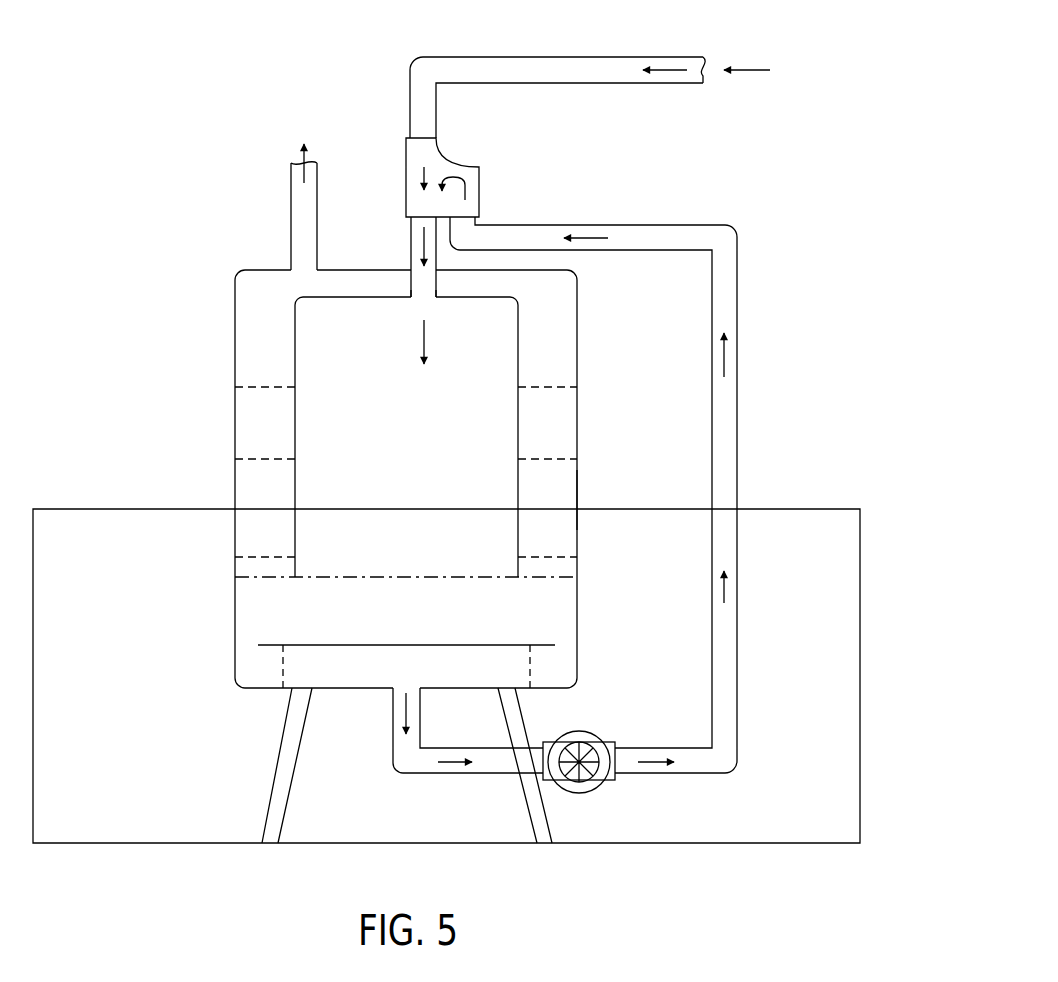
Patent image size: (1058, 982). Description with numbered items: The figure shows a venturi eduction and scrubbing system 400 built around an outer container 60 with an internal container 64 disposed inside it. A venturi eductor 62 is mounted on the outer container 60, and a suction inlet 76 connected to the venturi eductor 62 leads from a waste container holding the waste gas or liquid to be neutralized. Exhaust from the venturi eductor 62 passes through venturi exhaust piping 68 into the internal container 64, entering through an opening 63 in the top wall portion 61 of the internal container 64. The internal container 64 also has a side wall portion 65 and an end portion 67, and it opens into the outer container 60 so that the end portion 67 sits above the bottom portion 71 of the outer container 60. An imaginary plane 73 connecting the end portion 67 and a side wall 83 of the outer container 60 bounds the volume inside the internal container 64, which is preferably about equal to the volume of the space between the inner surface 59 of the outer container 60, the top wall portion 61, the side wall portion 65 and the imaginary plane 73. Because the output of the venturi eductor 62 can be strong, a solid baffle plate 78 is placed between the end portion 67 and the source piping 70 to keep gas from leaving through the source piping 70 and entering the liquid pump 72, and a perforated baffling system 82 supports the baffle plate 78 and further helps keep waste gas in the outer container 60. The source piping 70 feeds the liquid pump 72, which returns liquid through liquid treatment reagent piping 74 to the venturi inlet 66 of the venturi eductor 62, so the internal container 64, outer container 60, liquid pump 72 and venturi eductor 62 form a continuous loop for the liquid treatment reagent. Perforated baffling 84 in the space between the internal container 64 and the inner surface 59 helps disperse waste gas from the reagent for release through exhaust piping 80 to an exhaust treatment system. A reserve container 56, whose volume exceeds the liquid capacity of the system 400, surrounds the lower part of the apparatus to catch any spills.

The venturi eduction and scrubbing system 400 is at (330, 74).
The reserve container 56 is at (813, 509).
The inner surface 59 is at (235, 348).
The outer container 60 is at (235, 428).
The top wall portion 61 is at (506, 297).
The venturi eductor 62 is at (480, 180).
The opening 63 is at (436, 283).
The internal container 64 is at (518, 443).
The side wall portion 65 is at (518, 322).
The venturi inlet 66 is at (478, 221).
The end portion 67 is at (518, 575).
The venturi exhaust piping 68 is at (411, 240).
The source piping 70 is at (393, 742).
The bottom portion 71 is at (258, 693).
The liquid pump 72 is at (615, 780).
The imaginary plane 73 is at (497, 577).
The liquid treatment reagent piping 74 is at (738, 740).
The suction inlet 76 is at (628, 57).
The solid baffle plate 78 is at (445, 645).
The exhaust piping 80 is at (291, 195).
The perforated baffling system 82 is at (528, 655).
The side wall 83 is at (577, 500).
The perforated baffling 84 is at (260, 555).